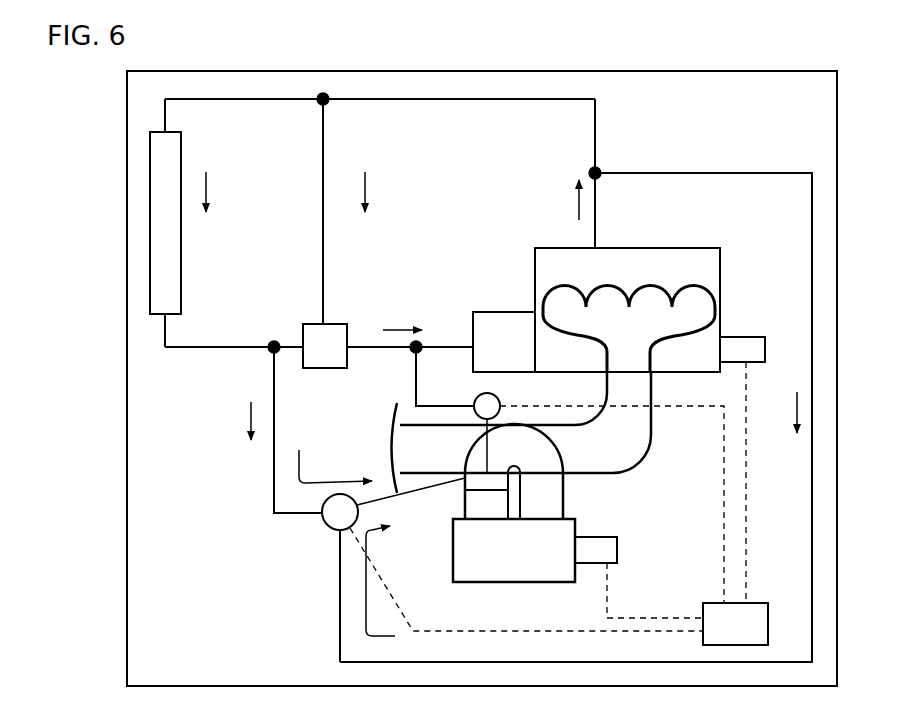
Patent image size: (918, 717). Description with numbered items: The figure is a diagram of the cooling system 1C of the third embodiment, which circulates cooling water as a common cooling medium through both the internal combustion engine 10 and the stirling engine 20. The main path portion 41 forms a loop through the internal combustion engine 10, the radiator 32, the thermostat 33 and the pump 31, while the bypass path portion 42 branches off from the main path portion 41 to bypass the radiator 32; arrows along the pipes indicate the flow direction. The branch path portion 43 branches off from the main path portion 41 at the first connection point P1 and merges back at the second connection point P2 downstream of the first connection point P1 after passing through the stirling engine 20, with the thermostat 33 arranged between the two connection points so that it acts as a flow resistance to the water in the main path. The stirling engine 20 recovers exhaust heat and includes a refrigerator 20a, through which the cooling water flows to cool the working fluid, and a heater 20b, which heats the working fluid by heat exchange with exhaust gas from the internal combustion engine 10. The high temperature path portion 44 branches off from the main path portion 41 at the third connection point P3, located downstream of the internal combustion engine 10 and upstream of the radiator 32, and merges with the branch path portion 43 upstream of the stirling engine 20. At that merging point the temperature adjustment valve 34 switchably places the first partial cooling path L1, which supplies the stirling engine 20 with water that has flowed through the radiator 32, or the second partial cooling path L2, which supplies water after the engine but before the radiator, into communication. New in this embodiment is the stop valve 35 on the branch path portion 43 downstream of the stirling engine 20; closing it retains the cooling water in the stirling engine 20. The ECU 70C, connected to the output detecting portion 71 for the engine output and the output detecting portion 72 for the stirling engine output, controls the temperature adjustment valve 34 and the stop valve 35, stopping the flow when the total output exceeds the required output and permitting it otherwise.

The cooling system 1C is at (127, 136).
The internal combustion engine 10 is at (670, 248).
The stirling engine 20 is at (453, 552).
The refrigerator 20a is at (485, 483).
The heater 20b is at (550, 450).
The pump 31 is at (503, 312).
The radiator 32 is at (181, 270).
The thermostat 33 is at (310, 324).
The temperature adjustment valve 34 is at (328, 527).
The stop valve 35 is at (500, 401).
The main path portion 41 is at (597, 132).
The bypass path portion 42 is at (323, 130).
The branch path portion 43 is at (274, 466).
The high temperature path portion 44 is at (340, 632).
The output detecting portion 71 is at (748, 337).
The output detecting portion 72 is at (617, 550).
The ECU 70C is at (758, 603).
The first connection point P1 is at (272, 352).
The second connection point P2 is at (414, 352).
The third connection point P3 is at (600, 178).
The first partial cooling path L1 is at (299, 483).
The second partial cooling path L2 is at (366, 595).